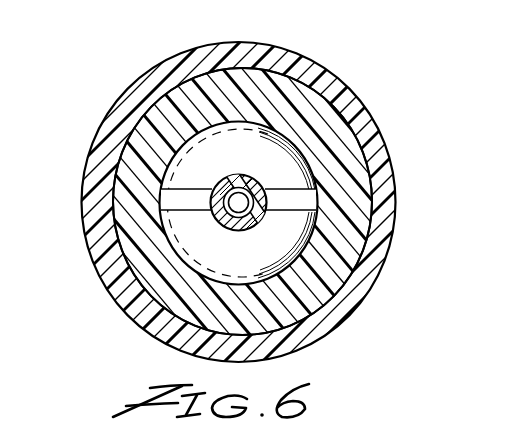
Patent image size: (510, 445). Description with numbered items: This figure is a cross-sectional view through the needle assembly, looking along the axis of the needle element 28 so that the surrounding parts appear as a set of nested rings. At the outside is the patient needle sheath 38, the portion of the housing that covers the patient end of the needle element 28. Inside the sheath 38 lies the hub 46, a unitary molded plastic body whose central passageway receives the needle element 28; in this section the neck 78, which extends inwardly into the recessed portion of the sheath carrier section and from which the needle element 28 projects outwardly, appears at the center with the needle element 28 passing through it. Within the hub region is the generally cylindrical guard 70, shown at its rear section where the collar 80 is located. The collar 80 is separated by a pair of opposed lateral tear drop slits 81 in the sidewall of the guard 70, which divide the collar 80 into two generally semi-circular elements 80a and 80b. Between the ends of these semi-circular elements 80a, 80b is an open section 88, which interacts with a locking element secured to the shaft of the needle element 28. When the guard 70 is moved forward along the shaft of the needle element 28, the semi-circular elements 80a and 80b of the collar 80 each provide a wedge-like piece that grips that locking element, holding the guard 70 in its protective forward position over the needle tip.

The needle element 28 is at (238, 176).
The patient needle sheath 38 is at (350, 96).
The hub 46 is at (214, 80).
The guard 70 is at (287, 180).
The neck 78 is at (230, 229).
The collar 80 is at (196, 243).
The semi-circular element 80a is at (305, 163).
The semi-circular element 80b is at (314, 241).
The tear drop slits 81 is at (318, 202).
The open section 88 is at (237, 178).